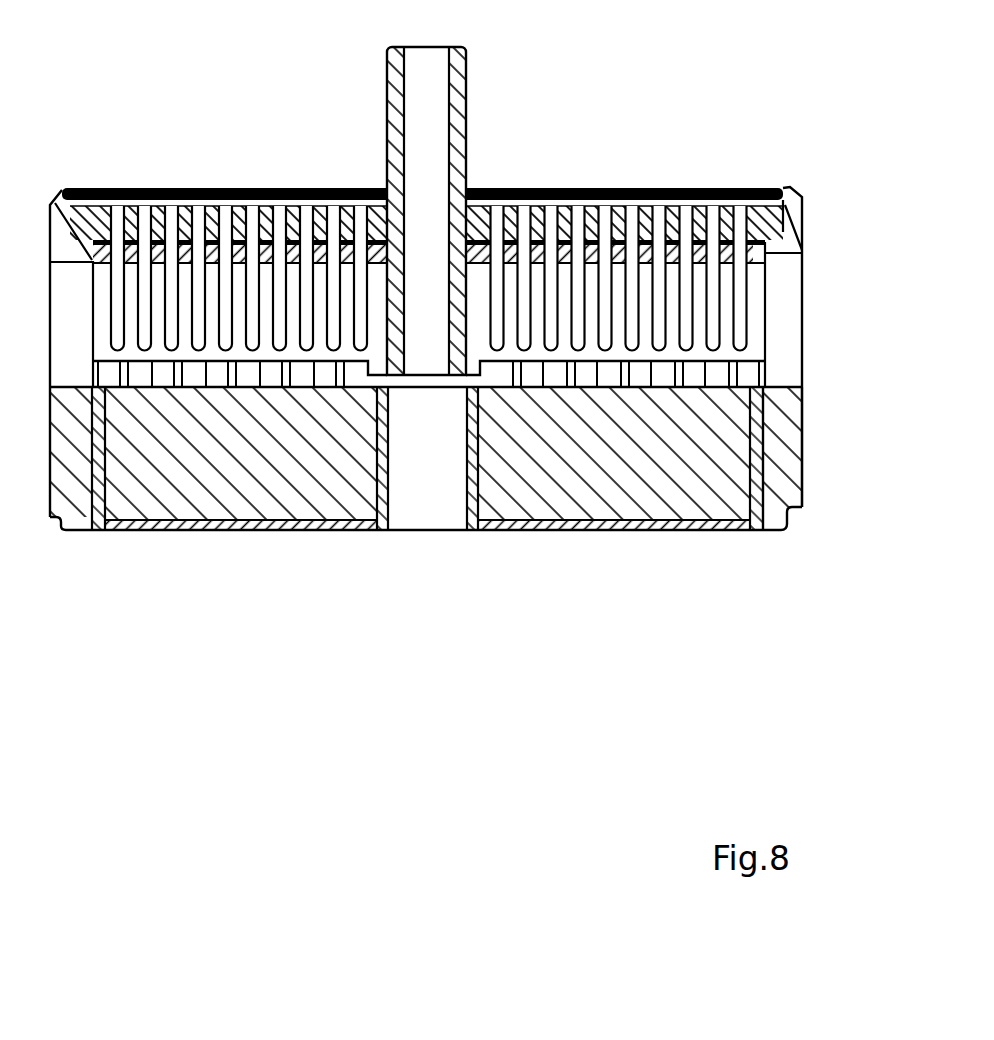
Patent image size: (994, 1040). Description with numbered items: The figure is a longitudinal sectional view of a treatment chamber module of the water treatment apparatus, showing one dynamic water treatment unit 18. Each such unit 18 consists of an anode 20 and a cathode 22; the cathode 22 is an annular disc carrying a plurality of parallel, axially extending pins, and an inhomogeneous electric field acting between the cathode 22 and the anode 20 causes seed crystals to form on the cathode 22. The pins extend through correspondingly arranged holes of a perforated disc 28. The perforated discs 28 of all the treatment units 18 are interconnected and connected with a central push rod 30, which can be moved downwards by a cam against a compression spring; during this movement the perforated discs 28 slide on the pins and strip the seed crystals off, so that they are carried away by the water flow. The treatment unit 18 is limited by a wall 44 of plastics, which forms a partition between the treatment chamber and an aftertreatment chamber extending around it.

The dynamic water treatment unit 18 is at (792, 167).
The anode 20 is at (147, 468).
The cathode 22 is at (90, 205).
The perforated disc 28 is at (681, 205).
The push rod 30 is at (428, 120).
The wall 44 is at (790, 455).